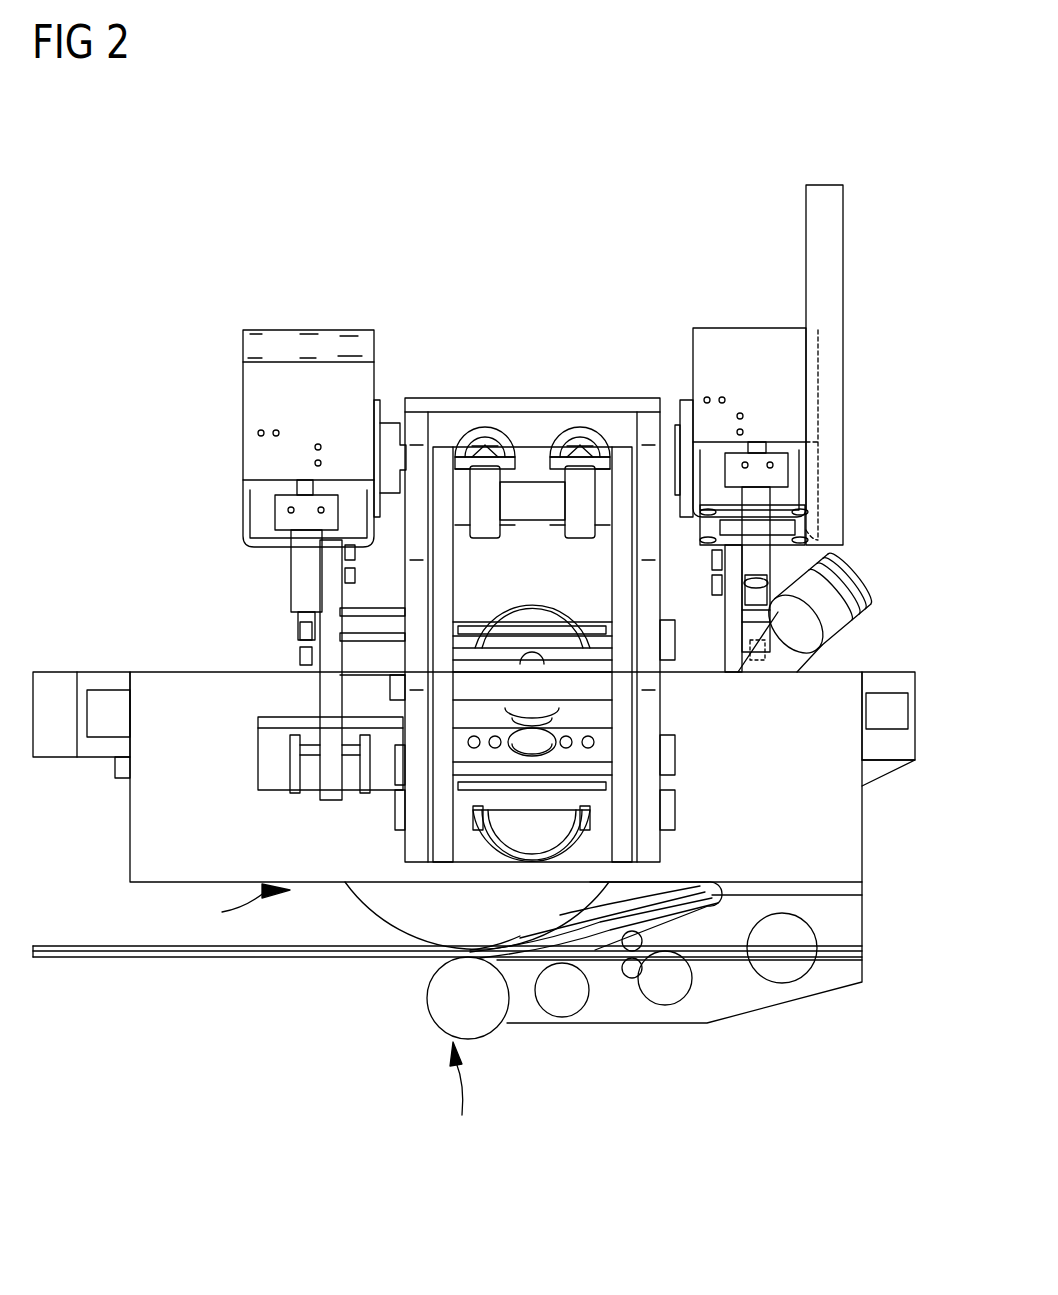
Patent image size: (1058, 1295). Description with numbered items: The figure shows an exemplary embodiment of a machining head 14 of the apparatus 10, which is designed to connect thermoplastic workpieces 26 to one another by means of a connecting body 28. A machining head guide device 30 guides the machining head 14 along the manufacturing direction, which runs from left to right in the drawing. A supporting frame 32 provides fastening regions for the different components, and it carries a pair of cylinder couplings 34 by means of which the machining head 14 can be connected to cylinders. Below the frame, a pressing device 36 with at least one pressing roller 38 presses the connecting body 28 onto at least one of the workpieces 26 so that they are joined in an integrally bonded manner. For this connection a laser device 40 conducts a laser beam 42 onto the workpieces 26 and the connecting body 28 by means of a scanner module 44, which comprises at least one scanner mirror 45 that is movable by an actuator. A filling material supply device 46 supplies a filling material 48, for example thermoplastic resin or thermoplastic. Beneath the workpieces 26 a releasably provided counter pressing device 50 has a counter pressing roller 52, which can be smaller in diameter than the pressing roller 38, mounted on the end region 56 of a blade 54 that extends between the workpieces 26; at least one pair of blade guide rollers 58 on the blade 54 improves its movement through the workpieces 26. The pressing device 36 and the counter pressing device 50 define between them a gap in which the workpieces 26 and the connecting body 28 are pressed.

The labeling device 10 is at (168, 192).
The machining head 14 is at (268, 235).
The thermoplastic workpieces 26 is at (92, 960).
The connecting body 28 is at (66, 945).
The machining head guide device 30 is at (404, 350).
The supporting frame 32 is at (226, 665).
The cylinder couplings 34 is at (152, 618).
The pressing device 36 is at (240, 907).
The pressing roller 38 is at (362, 898).
The laser device 40 is at (675, 280).
The laser beam 42 is at (812, 218).
The scanner module 44 is at (866, 515).
The scanner mirror 45 is at (828, 665).
The filling material supply device 46 is at (660, 885).
The filling material 48 is at (620, 924).
The counter pressing device 50 is at (655, 1085).
The counter pressing roller 52 is at (445, 1005).
The blade 54 is at (720, 1004).
The end region 56 is at (461, 1101).
The blade guide rollers 58 is at (630, 952).